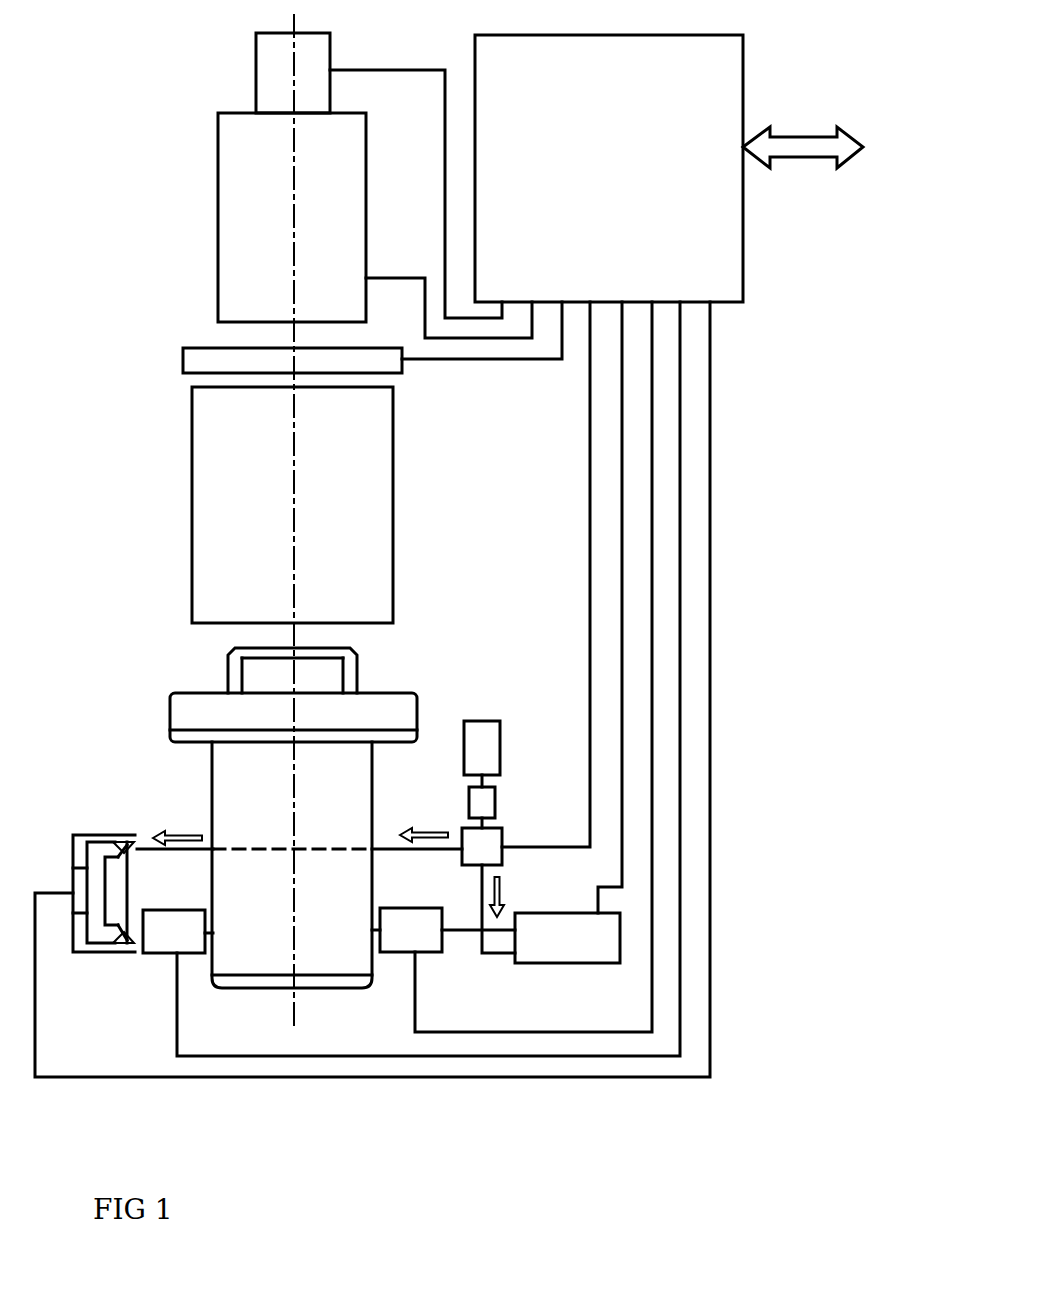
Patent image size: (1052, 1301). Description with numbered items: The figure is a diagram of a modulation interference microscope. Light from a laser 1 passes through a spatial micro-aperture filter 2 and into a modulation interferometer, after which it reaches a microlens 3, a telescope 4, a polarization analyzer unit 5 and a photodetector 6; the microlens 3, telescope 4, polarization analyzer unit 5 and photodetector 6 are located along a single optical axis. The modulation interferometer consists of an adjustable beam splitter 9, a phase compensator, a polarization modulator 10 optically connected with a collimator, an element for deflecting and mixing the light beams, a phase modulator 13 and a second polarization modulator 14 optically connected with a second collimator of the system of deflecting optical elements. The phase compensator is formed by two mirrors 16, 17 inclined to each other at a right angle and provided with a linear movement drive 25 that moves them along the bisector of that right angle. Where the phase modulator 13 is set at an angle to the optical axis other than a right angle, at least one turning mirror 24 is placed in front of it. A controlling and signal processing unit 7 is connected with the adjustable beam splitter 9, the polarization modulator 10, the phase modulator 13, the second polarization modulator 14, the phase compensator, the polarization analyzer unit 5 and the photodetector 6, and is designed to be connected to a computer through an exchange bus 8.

The laser 1 is at (490, 716).
The spatial micro-aperture filter 2 is at (484, 802).
The microlens 3 is at (375, 815).
The telescope 4 is at (225, 587).
The polarization analyzer unit 5 is at (212, 362).
The photodetector 6 is at (235, 212).
The controlling and signal processing unit 7 is at (490, 78).
The exchange bus 8 is at (795, 145).
The adjustable beam splitter 9 is at (487, 842).
The polarization modulator 10 is at (165, 940).
The phase modulator 13 is at (545, 937).
The second polarization modulator 14 is at (397, 920).
The mirror 16 is at (102, 840).
The mirror 17 is at (117, 947).
The turning mirror 24 is at (472, 946).
The linear movement drive 25 is at (72, 870).